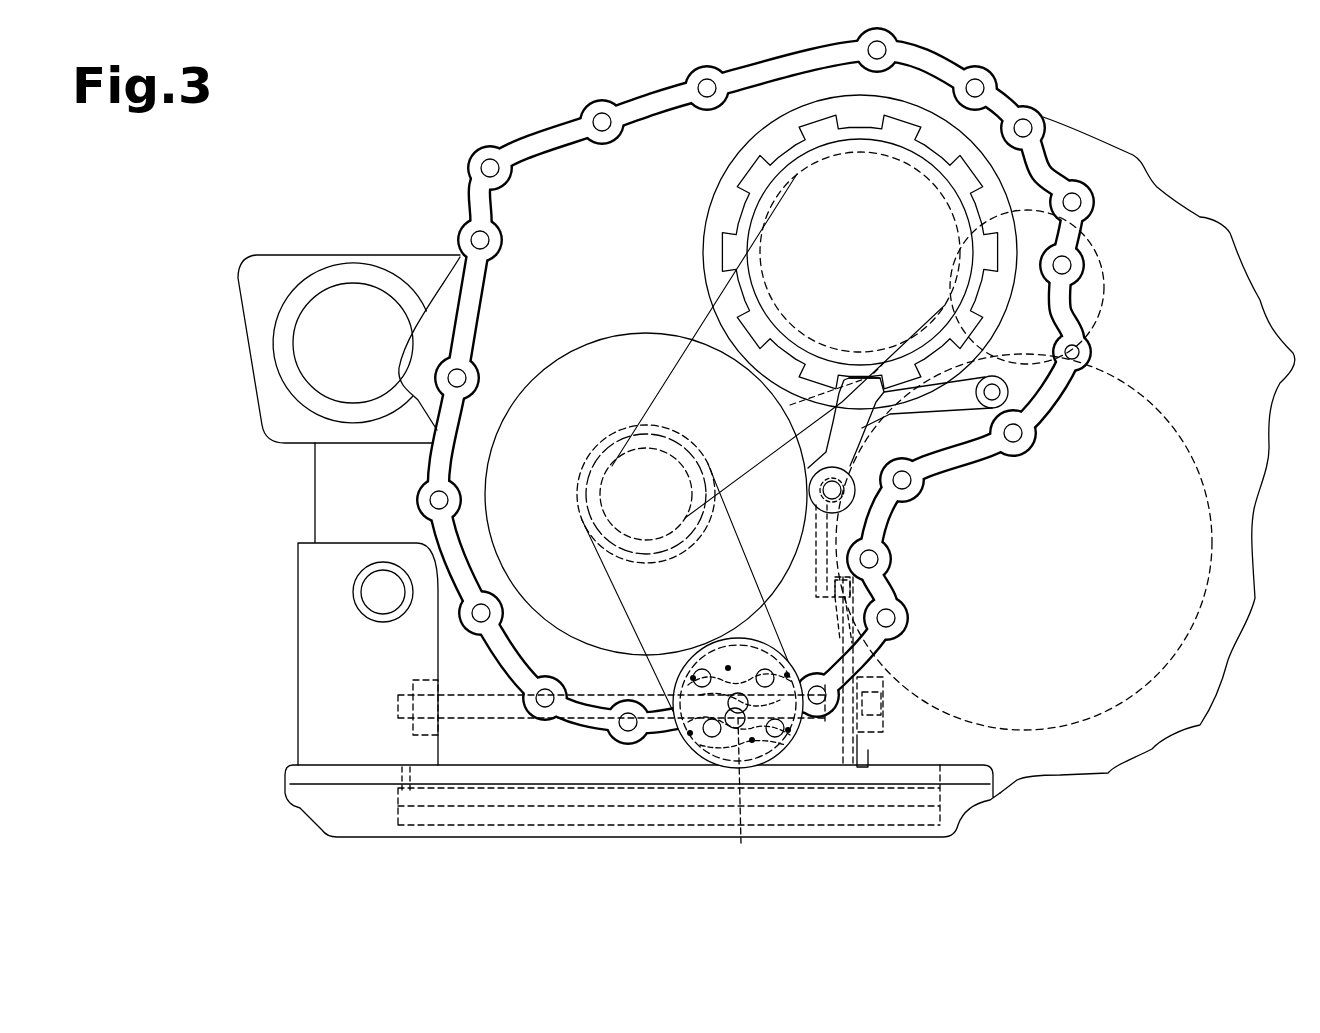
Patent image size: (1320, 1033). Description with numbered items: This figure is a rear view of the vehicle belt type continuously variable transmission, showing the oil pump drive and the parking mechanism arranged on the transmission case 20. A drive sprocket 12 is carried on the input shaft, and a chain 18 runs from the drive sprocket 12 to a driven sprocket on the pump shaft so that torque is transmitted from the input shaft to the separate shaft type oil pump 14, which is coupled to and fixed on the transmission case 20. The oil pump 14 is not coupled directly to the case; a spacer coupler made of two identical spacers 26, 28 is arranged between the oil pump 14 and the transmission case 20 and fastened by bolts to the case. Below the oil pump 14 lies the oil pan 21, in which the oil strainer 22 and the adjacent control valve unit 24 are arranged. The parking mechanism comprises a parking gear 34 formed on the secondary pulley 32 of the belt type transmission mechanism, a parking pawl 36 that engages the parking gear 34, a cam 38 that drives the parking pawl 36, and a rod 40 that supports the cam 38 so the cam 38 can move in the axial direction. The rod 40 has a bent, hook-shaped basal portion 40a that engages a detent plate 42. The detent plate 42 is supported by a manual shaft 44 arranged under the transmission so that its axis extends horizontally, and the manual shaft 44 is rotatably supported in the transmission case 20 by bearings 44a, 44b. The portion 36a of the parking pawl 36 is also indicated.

The drive sprocket 12 is at (603, 438).
The oil pump 14 is at (790, 750).
The chain 18 is at (603, 573).
The transmission case 20 is at (1226, 660).
The oil pan 21 is at (960, 813).
The oil strainer 22 is at (395, 827).
The control valve unit 24 is at (400, 777).
The spacer 26 is at (738, 660).
The spacer 28 is at (737, 798).
The secondary pulley 32 is at (910, 103).
The parking gear 34 is at (747, 170).
The parking pawl 36 is at (960, 412).
The tensioner arm contact portion 36a is at (872, 380).
The cam 38 is at (855, 490).
The rod 40 is at (838, 476).
The basal portion 40a is at (810, 558).
The detent plate 42 is at (877, 753).
The manual shaft 44 is at (475, 720).
The bearing 44a is at (891, 687).
The bearing 44b is at (417, 682).